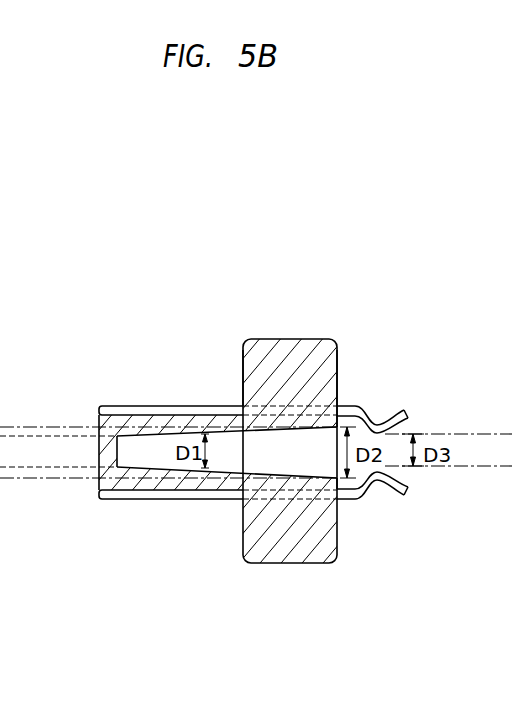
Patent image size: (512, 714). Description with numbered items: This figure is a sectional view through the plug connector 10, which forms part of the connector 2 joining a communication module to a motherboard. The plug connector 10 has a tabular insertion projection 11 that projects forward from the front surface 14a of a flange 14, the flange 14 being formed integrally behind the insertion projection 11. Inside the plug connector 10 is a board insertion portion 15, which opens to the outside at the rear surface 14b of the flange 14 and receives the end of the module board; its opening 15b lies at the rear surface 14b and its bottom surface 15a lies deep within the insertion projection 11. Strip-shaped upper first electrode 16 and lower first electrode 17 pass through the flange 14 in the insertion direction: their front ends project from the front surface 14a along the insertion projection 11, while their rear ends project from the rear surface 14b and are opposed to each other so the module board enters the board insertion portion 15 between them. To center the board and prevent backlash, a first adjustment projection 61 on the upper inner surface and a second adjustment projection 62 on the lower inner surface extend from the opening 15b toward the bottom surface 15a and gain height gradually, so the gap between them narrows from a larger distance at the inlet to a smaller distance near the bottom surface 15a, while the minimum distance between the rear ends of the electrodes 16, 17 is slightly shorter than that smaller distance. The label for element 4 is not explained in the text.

The connector 2 is at (348, 282).
The plug connector 10 is at (256, 366).
The electric wire 4 is at (256, 341).
The insertion projection 11 is at (98, 486).
The flange 14 is at (310, 400).
The front surface of the flange 14a is at (243, 363).
The rear surface of the flange 14b is at (338, 362).
The board insertion portion 15 is at (255, 490).
The bottom surface 15a is at (121, 465).
The opening 15b is at (343, 480).
The upper first electrode 16 is at (409, 413).
The lower first electrode 17 is at (410, 490).
The first adjustment projection 61 is at (240, 438).
The second adjustment projection 62 is at (236, 475).